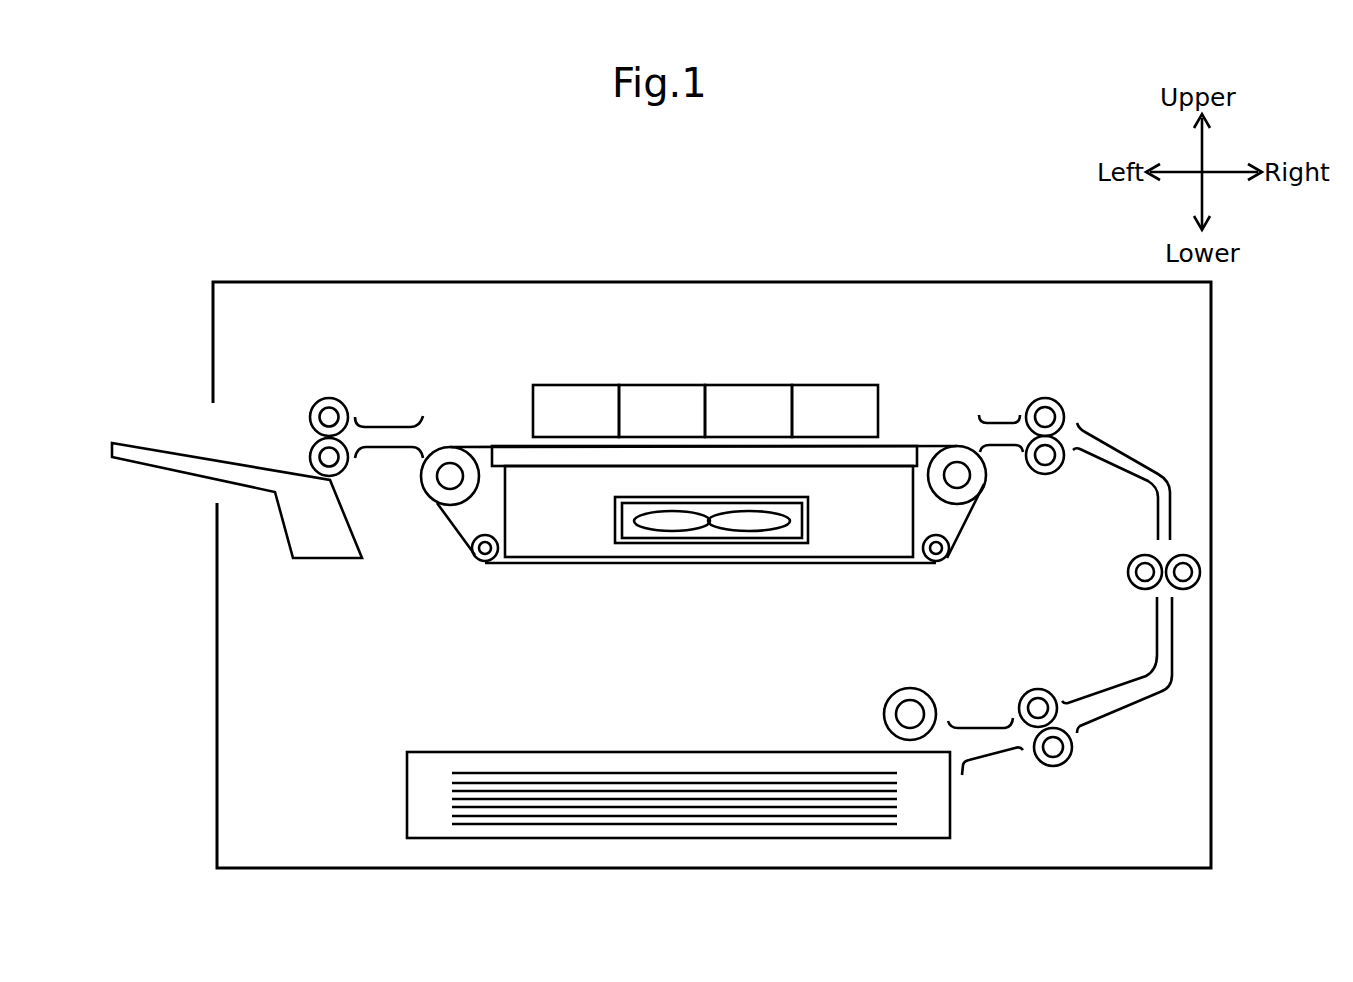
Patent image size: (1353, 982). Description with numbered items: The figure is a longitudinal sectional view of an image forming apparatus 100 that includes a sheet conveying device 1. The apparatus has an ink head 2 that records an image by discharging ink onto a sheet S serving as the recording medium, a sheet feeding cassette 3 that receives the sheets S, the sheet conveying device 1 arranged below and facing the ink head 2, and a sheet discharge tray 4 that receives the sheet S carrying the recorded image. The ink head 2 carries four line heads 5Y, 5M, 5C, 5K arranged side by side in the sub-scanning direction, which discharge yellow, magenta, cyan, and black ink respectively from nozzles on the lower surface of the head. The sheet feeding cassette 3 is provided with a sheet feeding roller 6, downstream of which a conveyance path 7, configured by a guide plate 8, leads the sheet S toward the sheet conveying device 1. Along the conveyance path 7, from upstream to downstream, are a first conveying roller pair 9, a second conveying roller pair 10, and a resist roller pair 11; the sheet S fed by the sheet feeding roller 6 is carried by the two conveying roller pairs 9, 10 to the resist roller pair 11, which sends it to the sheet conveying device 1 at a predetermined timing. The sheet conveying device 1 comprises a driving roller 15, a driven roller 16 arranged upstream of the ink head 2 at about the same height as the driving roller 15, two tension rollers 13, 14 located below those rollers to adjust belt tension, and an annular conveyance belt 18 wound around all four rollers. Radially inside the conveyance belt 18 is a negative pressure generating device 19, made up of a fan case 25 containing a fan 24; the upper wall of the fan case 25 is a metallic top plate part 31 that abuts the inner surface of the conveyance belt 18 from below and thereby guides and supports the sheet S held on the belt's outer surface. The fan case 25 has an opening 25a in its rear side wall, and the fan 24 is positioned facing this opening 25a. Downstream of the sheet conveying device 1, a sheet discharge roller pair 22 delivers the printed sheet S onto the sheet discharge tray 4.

The image forming apparatus 100 is at (174, 277).
The sheet conveying device 1 is at (905, 438).
The ink head 2 is at (705, 378).
The sheet feeding cassette 3 is at (785, 752).
The sheet discharge tray 4 is at (175, 457).
The line head 5Y is at (576, 411).
The line head 5M is at (662, 411).
The line head 5C is at (748, 411).
The line head 5K is at (835, 411).
The sheet feeding roller 6 is at (910, 689).
The conveyance path 7 is at (1128, 442).
The guide plate 8 is at (1157, 512).
The first conveying roller pair 9 is at (1058, 766).
The second conveying roller pair 10 is at (1187, 553).
The resist roller pair 11 is at (1065, 410).
The tension roller 13 is at (490, 563).
The tension roller 14 is at (936, 563).
The driving roller 15 is at (443, 505).
The driven roller 16 is at (957, 504).
The conveyance belt 18 is at (482, 445).
The negative pressure generating device 19 is at (812, 565).
The sheet discharge roller pair 22 is at (312, 402).
The fan 24 is at (665, 540).
The fan case 25 is at (582, 565).
The opening 25a is at (770, 535).
The top plate part 31 is at (523, 455).
The sheet S is at (495, 773).